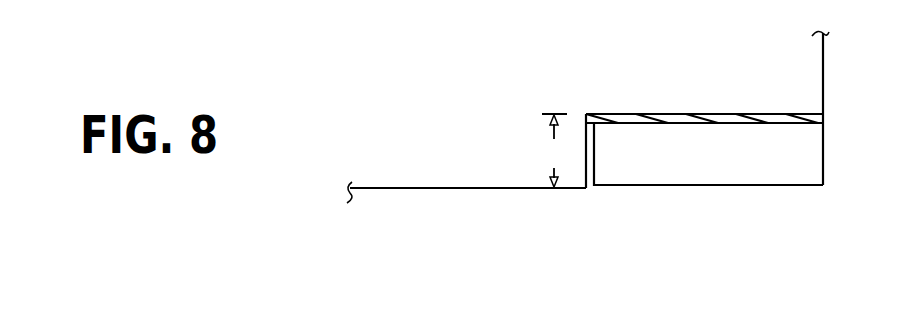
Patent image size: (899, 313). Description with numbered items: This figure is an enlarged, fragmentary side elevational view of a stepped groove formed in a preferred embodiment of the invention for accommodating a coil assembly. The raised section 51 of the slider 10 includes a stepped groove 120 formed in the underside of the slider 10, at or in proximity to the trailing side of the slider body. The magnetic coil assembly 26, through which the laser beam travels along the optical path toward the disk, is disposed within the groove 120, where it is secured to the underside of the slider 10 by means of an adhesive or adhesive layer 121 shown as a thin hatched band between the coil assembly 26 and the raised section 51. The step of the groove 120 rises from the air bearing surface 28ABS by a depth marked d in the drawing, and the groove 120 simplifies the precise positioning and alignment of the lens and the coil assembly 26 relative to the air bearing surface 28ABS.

The slider 10 is at (556, 78).
The coil assembly 26 is at (712, 169).
The air bearing surface 28ABS is at (465, 188).
The raised section 51 is at (825, 93).
The stepped groove 120 is at (588, 177).
The adhesive layer 121 is at (823, 118).
The recess depth d is at (554, 150).